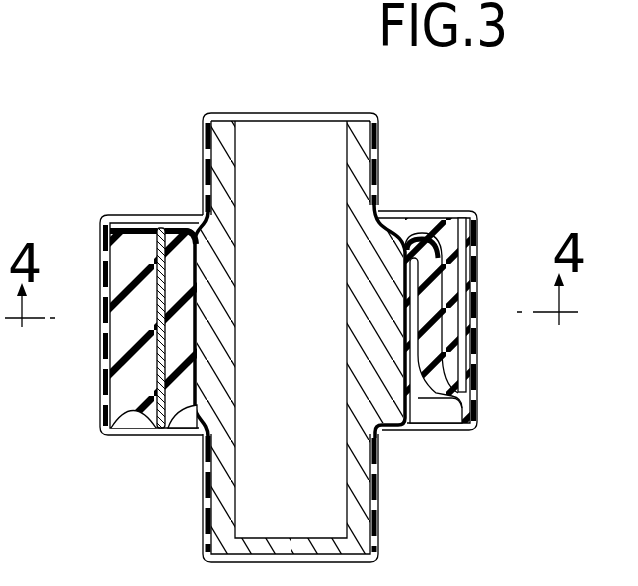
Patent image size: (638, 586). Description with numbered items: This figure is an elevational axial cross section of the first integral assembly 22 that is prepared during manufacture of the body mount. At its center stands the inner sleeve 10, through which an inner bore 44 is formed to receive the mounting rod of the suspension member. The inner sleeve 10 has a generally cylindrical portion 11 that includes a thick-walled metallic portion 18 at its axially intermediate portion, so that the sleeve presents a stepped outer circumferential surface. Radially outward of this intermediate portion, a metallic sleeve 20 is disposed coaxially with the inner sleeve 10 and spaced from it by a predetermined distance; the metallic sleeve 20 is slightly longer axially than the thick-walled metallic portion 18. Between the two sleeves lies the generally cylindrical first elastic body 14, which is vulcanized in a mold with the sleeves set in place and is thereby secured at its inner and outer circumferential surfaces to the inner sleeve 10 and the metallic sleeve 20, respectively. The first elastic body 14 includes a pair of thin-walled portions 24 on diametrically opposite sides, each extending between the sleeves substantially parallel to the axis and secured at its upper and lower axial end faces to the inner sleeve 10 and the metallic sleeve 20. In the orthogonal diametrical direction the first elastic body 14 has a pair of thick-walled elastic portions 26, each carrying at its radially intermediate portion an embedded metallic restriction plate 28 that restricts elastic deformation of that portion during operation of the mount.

The first integral assembly 22 is at (186, 80).
The inner sleeve 10 is at (331, 151).
The generally cylindrical portion 11 is at (360, 198).
The inner bore 44 is at (237, 190).
The first elastic body 14 is at (140, 206).
The metallic sleeve 20 is at (477, 290).
The thick-walled elastic portion 26 is at (127, 328).
The metallic restriction plate 28 is at (112, 392).
The thin-walled portion 24 is at (435, 310).
The thick-walled metallic portion 18 is at (407, 397).